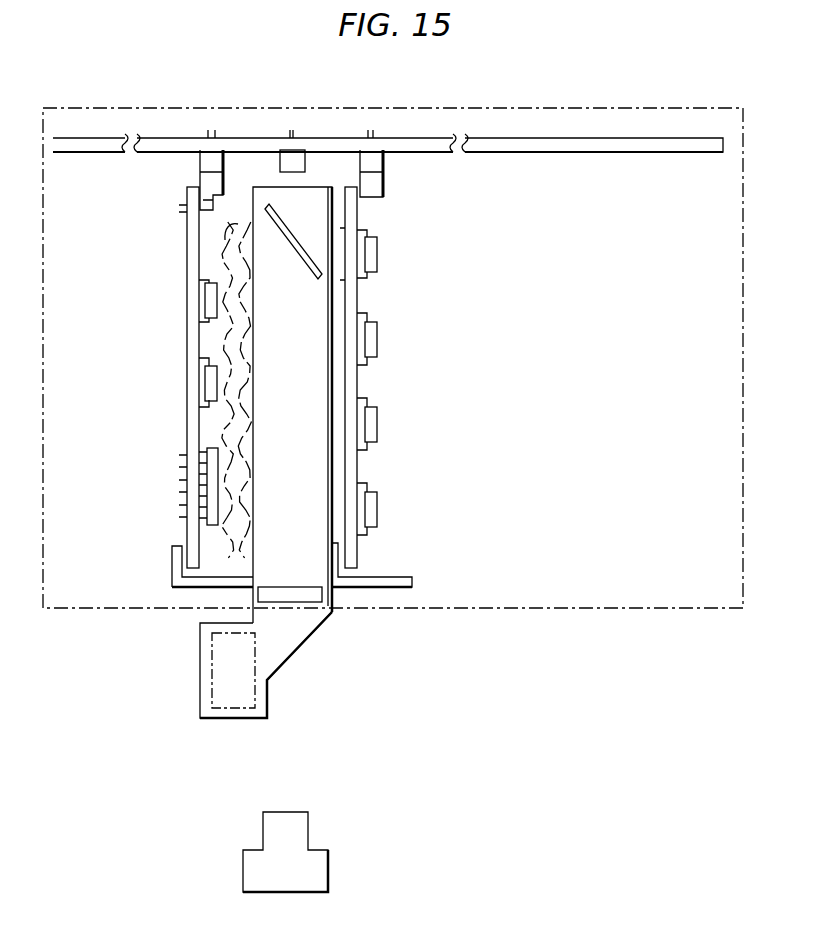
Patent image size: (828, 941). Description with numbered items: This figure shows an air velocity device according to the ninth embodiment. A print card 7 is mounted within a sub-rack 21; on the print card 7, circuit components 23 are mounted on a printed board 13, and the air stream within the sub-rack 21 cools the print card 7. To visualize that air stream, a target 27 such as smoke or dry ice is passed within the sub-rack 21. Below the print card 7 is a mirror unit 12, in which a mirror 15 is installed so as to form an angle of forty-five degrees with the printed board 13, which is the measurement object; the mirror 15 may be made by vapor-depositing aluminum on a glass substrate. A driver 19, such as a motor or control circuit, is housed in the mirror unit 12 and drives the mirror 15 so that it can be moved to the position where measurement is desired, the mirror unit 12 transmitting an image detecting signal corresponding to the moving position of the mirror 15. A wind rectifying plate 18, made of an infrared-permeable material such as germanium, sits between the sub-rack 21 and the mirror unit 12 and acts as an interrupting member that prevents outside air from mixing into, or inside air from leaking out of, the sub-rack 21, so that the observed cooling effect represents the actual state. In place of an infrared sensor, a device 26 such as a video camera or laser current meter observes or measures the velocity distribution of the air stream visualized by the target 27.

The sub-rack 21 is at (555, 108).
The print card 7 is at (186, 271).
The circuit components 23 is at (203, 380).
The printed board 13 is at (187, 530).
The target 27 is at (238, 224).
The mirror 15 is at (298, 241).
The wind rectifying plate 18 is at (300, 593).
The mirror unit 12 is at (222, 722).
The driver 19 is at (250, 695).
The device for observing or measuring the velocity distribution 26 is at (308, 830).